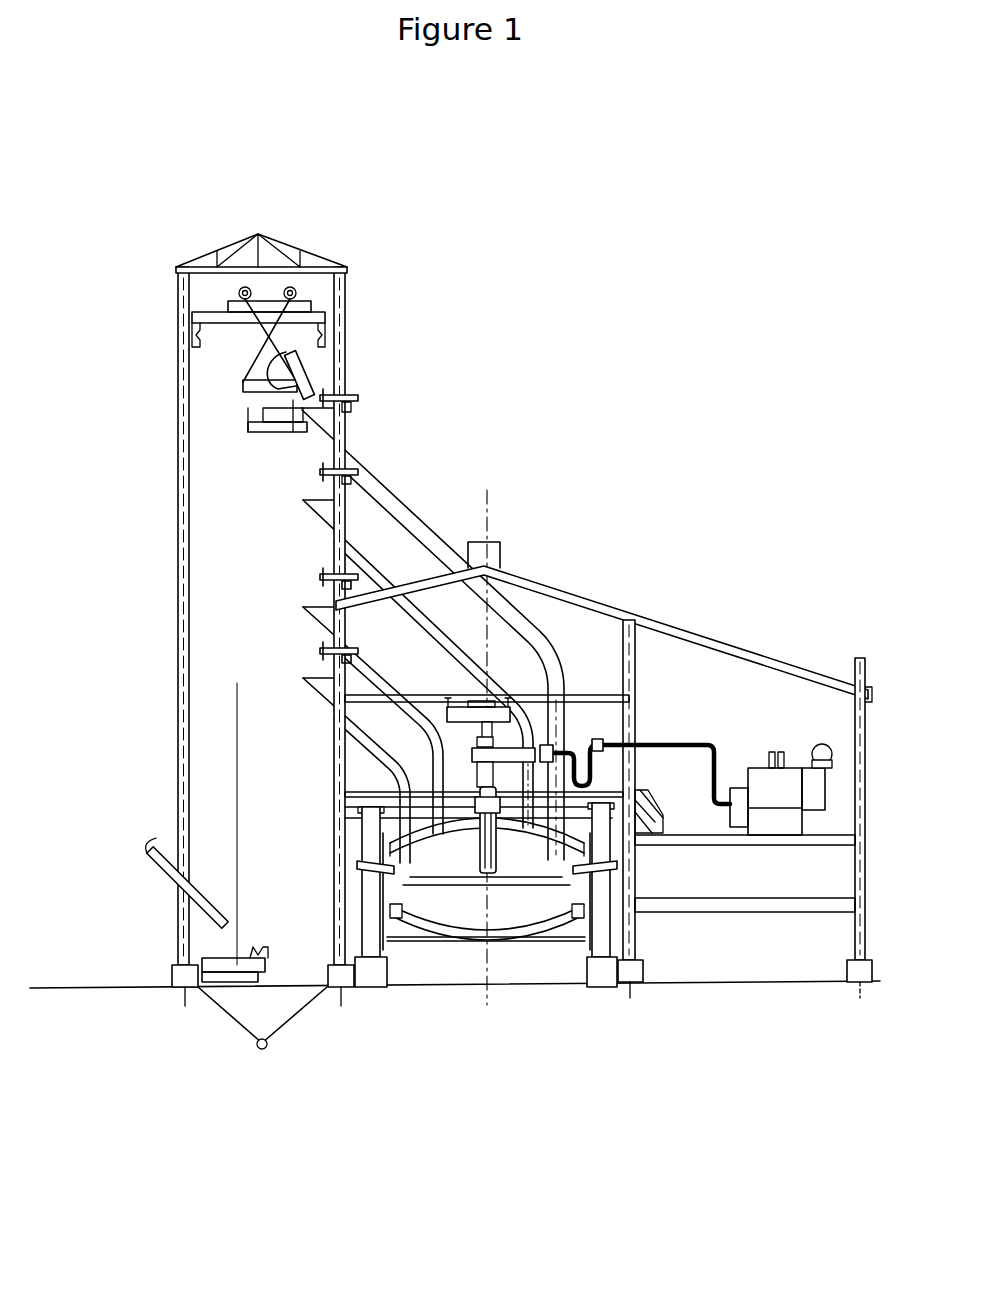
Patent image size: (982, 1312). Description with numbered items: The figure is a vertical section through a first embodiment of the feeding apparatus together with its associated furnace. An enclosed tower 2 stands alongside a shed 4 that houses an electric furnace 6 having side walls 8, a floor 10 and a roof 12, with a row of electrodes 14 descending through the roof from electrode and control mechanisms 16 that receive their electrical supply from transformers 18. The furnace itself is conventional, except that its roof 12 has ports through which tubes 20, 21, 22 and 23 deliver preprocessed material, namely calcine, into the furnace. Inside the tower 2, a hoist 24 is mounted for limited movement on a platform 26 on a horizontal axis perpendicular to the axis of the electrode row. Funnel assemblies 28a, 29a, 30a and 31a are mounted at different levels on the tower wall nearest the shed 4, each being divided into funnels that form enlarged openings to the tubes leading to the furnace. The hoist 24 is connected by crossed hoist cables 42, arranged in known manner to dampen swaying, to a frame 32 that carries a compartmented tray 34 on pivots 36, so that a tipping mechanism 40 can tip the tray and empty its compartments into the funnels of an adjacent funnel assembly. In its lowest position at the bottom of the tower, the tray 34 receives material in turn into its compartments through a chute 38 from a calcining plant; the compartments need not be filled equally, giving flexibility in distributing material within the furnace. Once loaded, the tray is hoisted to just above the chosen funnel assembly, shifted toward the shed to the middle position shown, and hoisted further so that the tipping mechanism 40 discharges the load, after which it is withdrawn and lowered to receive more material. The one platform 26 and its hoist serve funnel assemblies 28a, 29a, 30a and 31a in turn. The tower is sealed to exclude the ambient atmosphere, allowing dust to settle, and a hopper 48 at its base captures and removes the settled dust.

The enclosed tower 2 is at (158, 494).
The shed 4 is at (682, 608).
The electric furnace 6 is at (457, 890).
The side walls 8 is at (580, 876).
The floor 10 is at (497, 885).
The roof 12 is at (410, 880).
The electrodes 14 is at (488, 876).
The electrode and control mechanisms 16 is at (507, 746).
The transformers 18 is at (792, 772).
The tube 20 is at (350, 724).
The tube 21 is at (350, 672).
The tube 22 is at (342, 577).
The tube 23 is at (345, 540).
The hoist 24 is at (262, 300).
The platform 26 is at (218, 330).
The funnel assembly 28a is at (305, 680).
The funnel assembly 29a is at (305, 609).
The funnel assembly 30a is at (330, 500).
The funnel assembly 31a is at (312, 440).
The frame 32 is at (243, 388).
The compartmented tray 34 is at (313, 378).
The pivots 36 is at (292, 354).
The chute 38 is at (150, 880).
The tipping mechanism 40 is at (358, 397).
The hoist cables 42 is at (257, 342).
The hopper 48 is at (285, 1035).